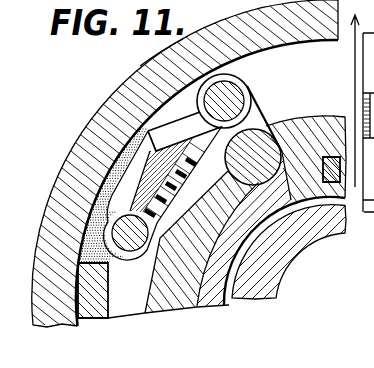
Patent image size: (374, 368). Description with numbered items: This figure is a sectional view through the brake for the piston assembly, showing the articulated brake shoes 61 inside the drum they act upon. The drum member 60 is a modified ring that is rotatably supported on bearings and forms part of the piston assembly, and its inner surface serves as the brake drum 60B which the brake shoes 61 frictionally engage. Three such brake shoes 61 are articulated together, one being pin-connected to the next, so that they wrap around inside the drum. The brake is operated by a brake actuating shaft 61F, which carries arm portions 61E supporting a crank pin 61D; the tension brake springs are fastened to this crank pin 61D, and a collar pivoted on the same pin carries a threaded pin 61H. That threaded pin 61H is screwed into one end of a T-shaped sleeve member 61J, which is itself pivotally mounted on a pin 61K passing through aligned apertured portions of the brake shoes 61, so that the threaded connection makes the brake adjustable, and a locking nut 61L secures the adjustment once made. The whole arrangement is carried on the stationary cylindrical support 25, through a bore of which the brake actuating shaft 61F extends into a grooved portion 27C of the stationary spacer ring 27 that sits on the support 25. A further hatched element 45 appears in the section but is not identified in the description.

The drum member 60 is at (100, 132).
The brake drum 60B is at (286, 45).
The brake shoe 61 is at (104, 324).
The crank pin 61D is at (246, 86).
The arm portions 61E is at (260, 130).
The brake actuating shaft 61F is at (255, 131).
The threaded pin 61H is at (160, 65).
The T shaped sleeve member 61J is at (118, 200).
The pin 61K is at (123, 240).
The locking nut 61L is at (150, 133).
The cylindrical support 25 is at (215, 295).
The spacer ring 27 is at (180, 312).
The grooved portion 27C is at (293, 140).
The hub 45 is at (300, 252).